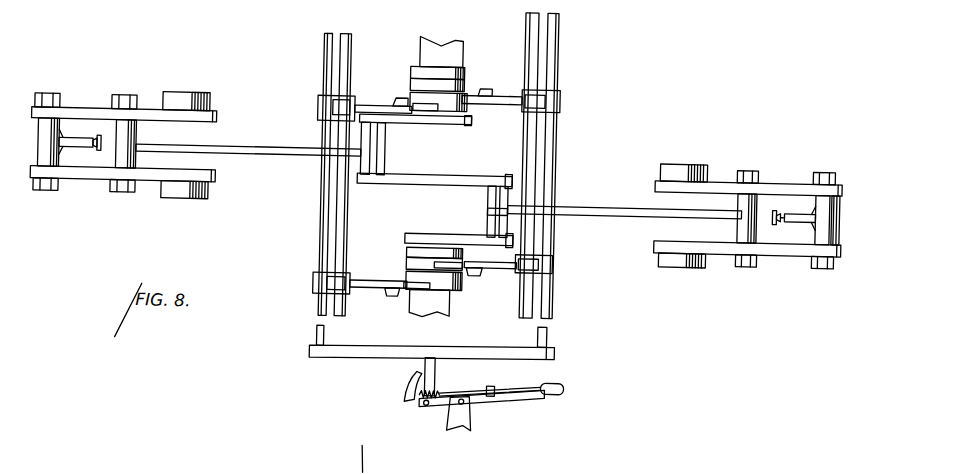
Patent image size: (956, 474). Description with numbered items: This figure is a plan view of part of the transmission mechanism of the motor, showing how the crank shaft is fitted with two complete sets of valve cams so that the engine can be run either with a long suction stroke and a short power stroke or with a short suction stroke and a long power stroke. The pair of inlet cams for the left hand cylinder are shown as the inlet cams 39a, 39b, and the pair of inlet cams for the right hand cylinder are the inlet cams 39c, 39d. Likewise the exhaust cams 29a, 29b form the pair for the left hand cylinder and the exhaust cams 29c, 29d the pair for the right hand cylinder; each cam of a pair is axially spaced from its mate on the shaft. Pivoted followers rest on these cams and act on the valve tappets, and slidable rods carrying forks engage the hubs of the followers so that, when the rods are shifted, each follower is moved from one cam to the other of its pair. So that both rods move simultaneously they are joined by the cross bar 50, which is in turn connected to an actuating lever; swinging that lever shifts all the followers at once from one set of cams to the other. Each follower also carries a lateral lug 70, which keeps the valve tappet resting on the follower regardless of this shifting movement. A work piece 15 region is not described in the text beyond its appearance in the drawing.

The blank or work piece 15 is at (432, 55).
The exhaust cam 29a is at (459, 297).
The exhaust cam 29b is at (467, 282).
The exhaust cam 29c is at (409, 265).
The exhaust cam 29d is at (410, 252).
The inlet cam 39a is at (458, 110).
The inlet cam 39b is at (432, 112).
The inlet cam 39c is at (411, 86).
The inlet cam 39d is at (424, 70).
The cross bar 50 is at (387, 360).
The lateral lug 70 is at (488, 91).